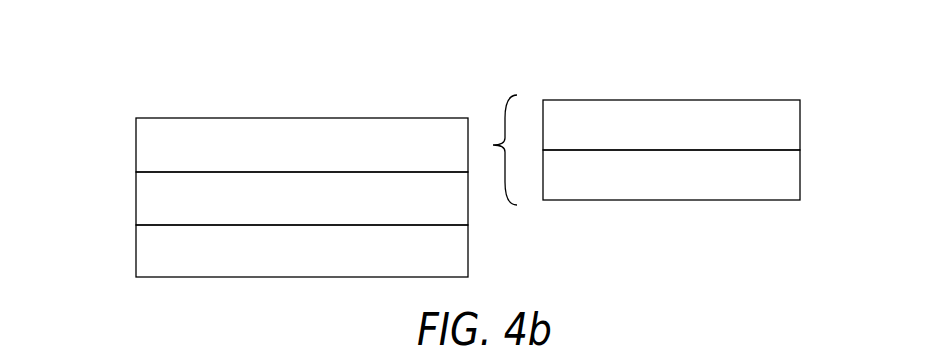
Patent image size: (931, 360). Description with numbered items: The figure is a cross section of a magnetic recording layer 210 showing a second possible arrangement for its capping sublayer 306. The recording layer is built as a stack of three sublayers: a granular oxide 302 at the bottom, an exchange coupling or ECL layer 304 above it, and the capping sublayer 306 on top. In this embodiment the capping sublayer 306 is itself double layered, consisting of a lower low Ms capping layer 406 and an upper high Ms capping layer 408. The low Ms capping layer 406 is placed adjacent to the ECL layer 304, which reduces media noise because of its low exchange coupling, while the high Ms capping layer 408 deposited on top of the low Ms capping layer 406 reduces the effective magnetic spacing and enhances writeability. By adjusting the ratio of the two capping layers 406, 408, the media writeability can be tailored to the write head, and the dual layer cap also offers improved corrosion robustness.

The recording layer 210 is at (125, 90).
The capping sublayer 306 is at (136, 153).
The ECL layer 304 is at (136, 207).
The granular oxide 302 is at (136, 259).
The high Ms capping layer 408 is at (801, 134).
The low Ms capping layer 406 is at (801, 184).